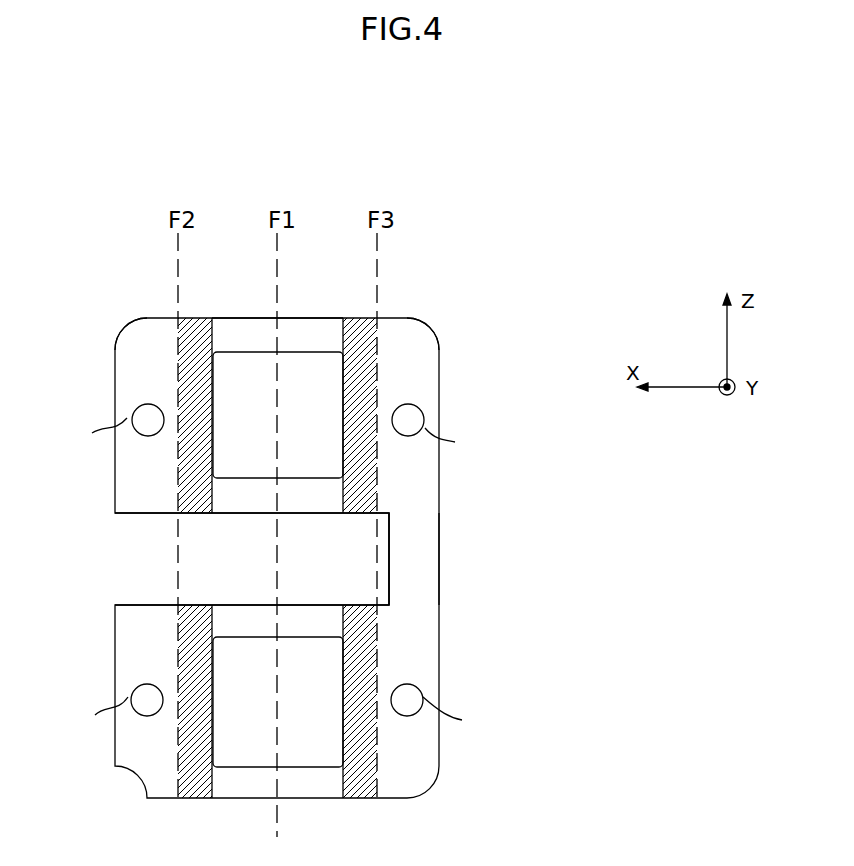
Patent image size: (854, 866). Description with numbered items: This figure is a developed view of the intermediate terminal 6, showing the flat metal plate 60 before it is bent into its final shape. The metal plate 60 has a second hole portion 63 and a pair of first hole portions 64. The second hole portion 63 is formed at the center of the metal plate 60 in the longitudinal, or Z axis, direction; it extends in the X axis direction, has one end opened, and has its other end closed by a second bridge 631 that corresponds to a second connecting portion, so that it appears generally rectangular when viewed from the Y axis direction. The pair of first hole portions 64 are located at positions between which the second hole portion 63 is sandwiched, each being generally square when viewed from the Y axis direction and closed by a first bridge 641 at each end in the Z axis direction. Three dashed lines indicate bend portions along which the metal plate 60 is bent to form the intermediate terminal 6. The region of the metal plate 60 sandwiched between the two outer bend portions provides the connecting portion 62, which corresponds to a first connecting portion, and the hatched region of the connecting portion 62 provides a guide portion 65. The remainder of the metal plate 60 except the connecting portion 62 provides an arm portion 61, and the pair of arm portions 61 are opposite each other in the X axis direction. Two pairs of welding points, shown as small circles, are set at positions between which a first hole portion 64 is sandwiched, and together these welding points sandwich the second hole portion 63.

The intermediate terminal 6 is at (282, 502).
The metal plate 60 is at (410, 320).
The arm portion 61 is at (115, 350).
The connecting portion 62 is at (308, 318).
The second hole portion 63 is at (157, 512).
The second bridge 631 is at (417, 545).
The first hole portion 64 is at (343, 408).
The first bridge 641 is at (233, 333).
The guide portion 65 is at (185, 385).